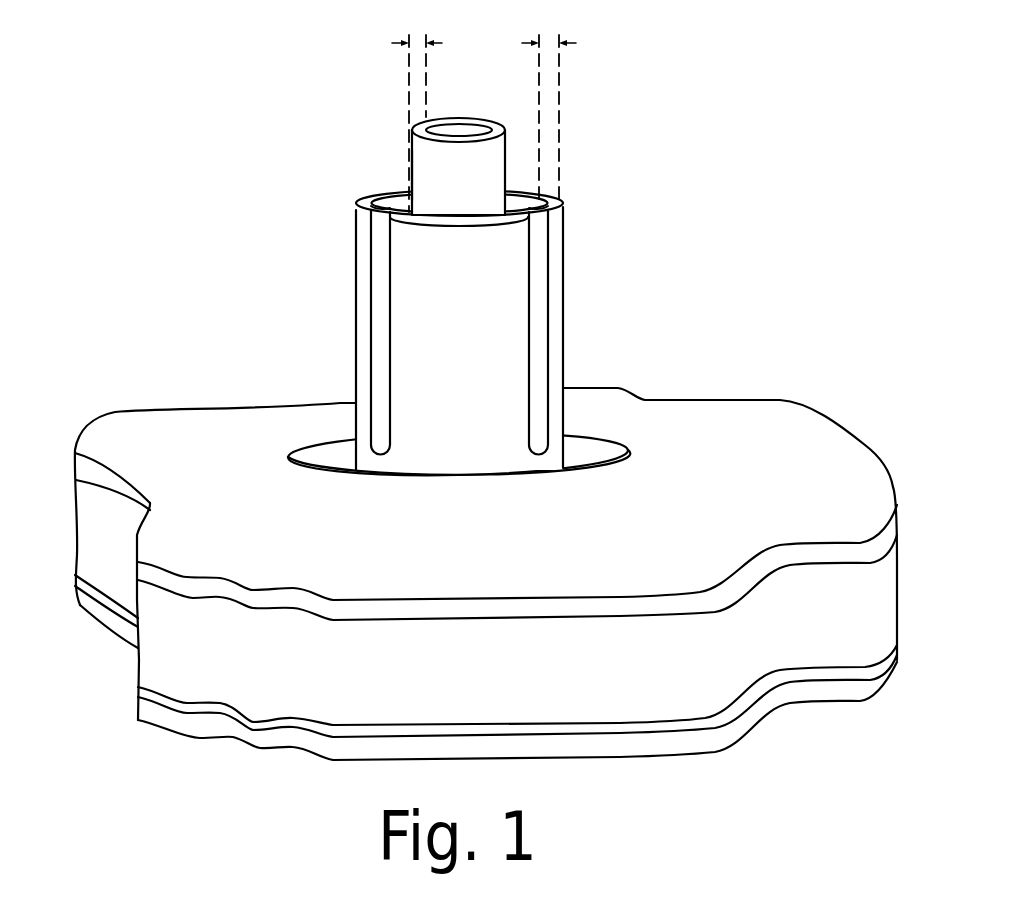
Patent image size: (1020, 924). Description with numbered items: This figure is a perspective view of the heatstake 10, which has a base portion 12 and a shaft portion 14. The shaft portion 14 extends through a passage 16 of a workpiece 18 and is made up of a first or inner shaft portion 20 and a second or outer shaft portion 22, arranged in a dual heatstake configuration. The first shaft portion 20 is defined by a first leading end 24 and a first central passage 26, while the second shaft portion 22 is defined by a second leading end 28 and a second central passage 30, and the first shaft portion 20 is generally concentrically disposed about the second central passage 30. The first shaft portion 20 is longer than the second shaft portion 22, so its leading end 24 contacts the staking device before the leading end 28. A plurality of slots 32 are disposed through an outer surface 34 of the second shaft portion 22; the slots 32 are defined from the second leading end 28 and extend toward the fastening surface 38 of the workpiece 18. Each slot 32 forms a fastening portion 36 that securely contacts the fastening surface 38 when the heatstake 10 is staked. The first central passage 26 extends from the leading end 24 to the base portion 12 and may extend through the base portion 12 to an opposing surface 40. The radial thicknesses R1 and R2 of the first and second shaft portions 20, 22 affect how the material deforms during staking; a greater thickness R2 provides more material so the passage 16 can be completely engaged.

The heatstake 10 is at (344, 62).
The base portion 12 is at (198, 725).
The shaft portion 14 is at (530, 171).
The passage 16 is at (587, 447).
The workpiece 18 is at (53, 528).
The first shaft portion 20 is at (412, 147).
The second shaft portion 22 is at (356, 252).
The first leading end 24 is at (493, 130).
The first central passage 26 is at (462, 128).
The second leading end 28 is at (367, 210).
The second central passage 30 is at (522, 207).
The slots 32 is at (380, 280).
The outer surface 34 is at (470, 252).
The fastening portion 36 is at (365, 322).
The fastening surface 38 is at (778, 450).
The opposing surface 40 is at (440, 173).
The radial thickness of first shaft portion R1 is at (417, 110).
The radial thickness of second shaft portion R2 is at (549, 106).